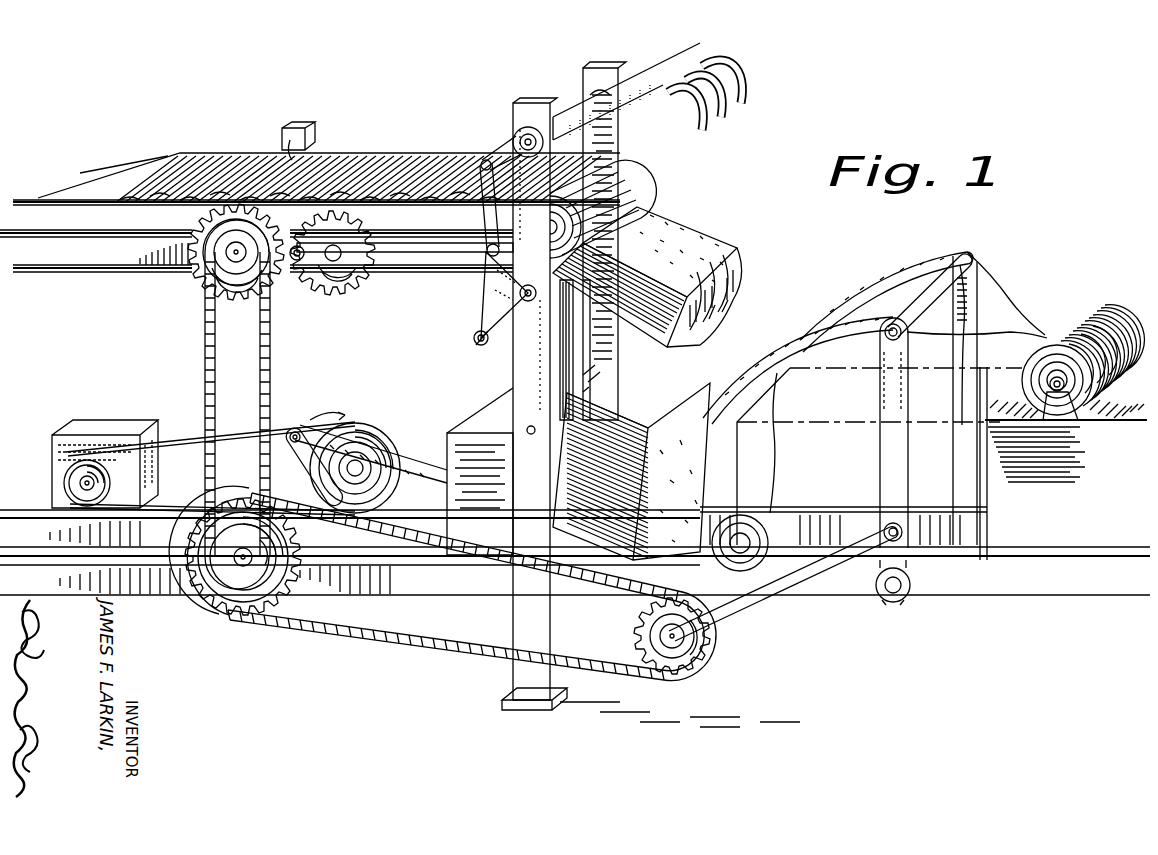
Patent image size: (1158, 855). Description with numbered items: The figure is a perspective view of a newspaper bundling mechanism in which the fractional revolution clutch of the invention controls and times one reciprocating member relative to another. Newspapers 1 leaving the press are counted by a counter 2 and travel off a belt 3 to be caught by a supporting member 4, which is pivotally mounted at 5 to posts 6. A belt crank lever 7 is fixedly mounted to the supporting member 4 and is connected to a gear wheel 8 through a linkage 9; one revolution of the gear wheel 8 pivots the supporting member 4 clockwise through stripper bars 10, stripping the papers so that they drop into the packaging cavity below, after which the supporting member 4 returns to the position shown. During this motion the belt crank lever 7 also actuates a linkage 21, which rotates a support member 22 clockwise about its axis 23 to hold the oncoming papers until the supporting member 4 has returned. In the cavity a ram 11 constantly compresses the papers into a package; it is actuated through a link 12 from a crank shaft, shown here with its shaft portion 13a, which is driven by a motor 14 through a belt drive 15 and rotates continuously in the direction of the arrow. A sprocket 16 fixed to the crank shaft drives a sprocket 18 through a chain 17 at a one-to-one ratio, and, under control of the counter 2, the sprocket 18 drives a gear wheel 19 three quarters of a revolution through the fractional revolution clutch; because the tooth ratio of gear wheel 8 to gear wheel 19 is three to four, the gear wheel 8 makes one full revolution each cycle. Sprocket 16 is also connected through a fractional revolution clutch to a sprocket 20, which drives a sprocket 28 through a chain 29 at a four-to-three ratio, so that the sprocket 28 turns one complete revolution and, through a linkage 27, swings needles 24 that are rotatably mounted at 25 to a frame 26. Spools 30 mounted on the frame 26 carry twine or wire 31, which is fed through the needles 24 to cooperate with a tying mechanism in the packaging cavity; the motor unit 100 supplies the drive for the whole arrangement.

The newspapers 1 is at (397, 166).
The counter 2 is at (312, 128).
The belt 3 is at (640, 188).
The supporting member 4 is at (746, 276).
The pivot 5 is at (484, 346).
The posts 6 is at (583, 73).
The belt crank lever 7 is at (472, 336).
The gear wheel 8 is at (330, 282).
The linkage 9 is at (425, 252).
The stripper bars 10 is at (580, 365).
The ram 11 is at (490, 411).
The link 12 is at (410, 463).
The sprocket hub 13a is at (239, 566).
The motor 14 is at (87, 483).
The belt drive 15 is at (183, 452).
The sprocket 16 is at (214, 572).
The chain 17 is at (272, 370).
The sprocket 18 is at (252, 297).
The gear wheel 19 is at (206, 262).
The sprocket 20 is at (263, 612).
The linkage 21 is at (478, 216).
The support member 22 is at (738, 80).
The axis 23 is at (514, 136).
The needles 24 is at (942, 248).
The pivot mounting 25 is at (893, 595).
The frame 26 is at (1026, 584).
The linkage 27 is at (773, 586).
The sprocket 28 is at (712, 656).
The chain 29 is at (640, 664).
The spools 30 is at (1080, 414).
The twine or wire 31 is at (1043, 342).
The motor 100 is at (133, 413).